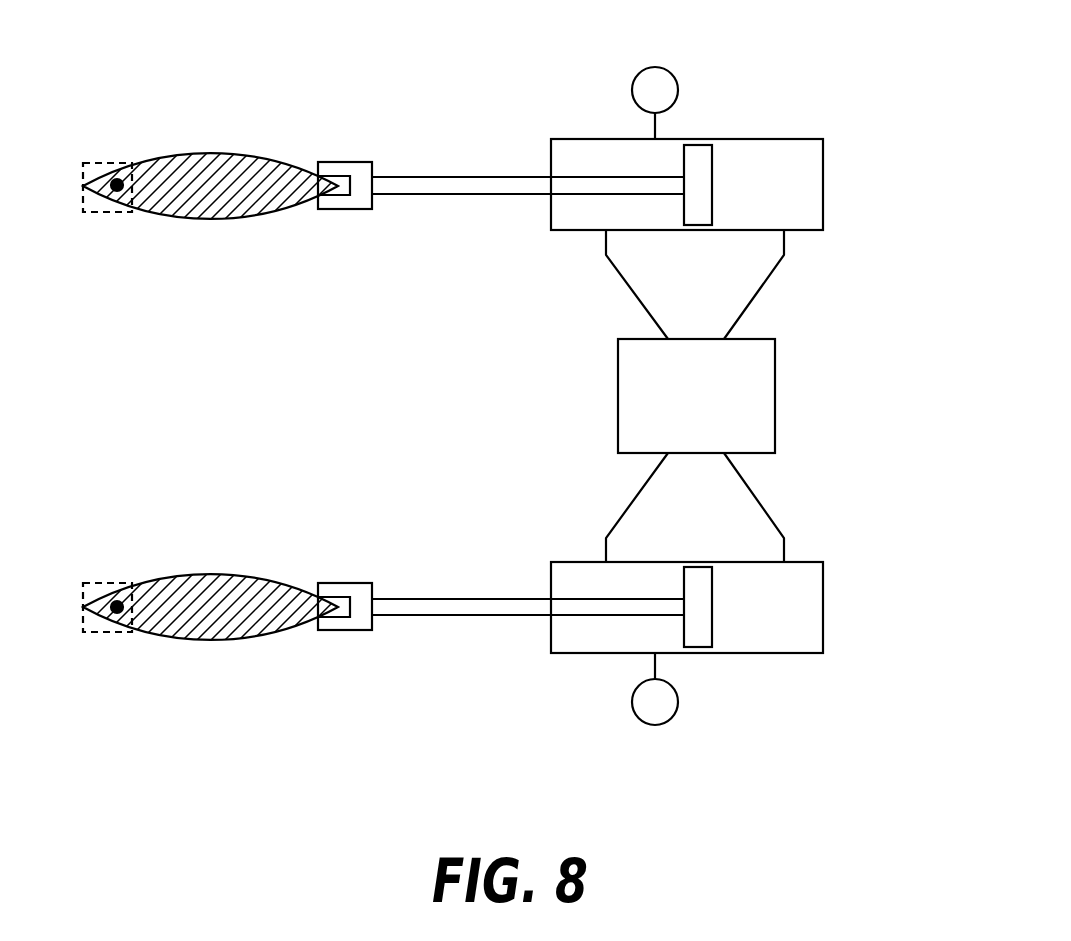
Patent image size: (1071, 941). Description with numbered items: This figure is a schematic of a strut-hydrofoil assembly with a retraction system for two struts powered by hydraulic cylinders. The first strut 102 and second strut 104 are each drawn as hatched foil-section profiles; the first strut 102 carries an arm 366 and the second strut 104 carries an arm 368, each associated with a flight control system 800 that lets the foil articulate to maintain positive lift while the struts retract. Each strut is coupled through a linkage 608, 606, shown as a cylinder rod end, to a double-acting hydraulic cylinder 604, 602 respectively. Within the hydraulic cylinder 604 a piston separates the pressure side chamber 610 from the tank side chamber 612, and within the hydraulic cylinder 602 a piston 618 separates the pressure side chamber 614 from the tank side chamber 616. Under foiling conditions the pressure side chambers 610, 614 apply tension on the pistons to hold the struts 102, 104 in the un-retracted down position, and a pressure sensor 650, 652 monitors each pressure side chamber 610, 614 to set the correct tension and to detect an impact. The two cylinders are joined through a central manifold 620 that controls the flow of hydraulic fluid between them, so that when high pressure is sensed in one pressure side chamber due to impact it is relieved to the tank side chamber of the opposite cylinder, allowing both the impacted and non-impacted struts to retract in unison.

The first strut 102 is at (212, 575).
The second strut 104 is at (212, 153).
The arm 366 is at (115, 611).
The arm 368 is at (117, 181).
The flight control system 800 is at (103, 214).
The double-acting hydraulic cylinder 602 is at (780, 139).
The double-acting hydraulic cylinder 604 is at (780, 653).
The linkage 606 is at (443, 177).
The linkage 608 is at (443, 599).
The pressure side chamber 610 is at (611, 635).
The tank side chamber 612 is at (737, 612).
The pressure side chamber 614 is at (611, 158).
The tank side chamber 616 is at (737, 180).
The piston 618 is at (700, 152).
The manifold 620 is at (775, 392).
The pressure sensor 650 is at (655, 725).
The pressure sensor 652 is at (655, 67).